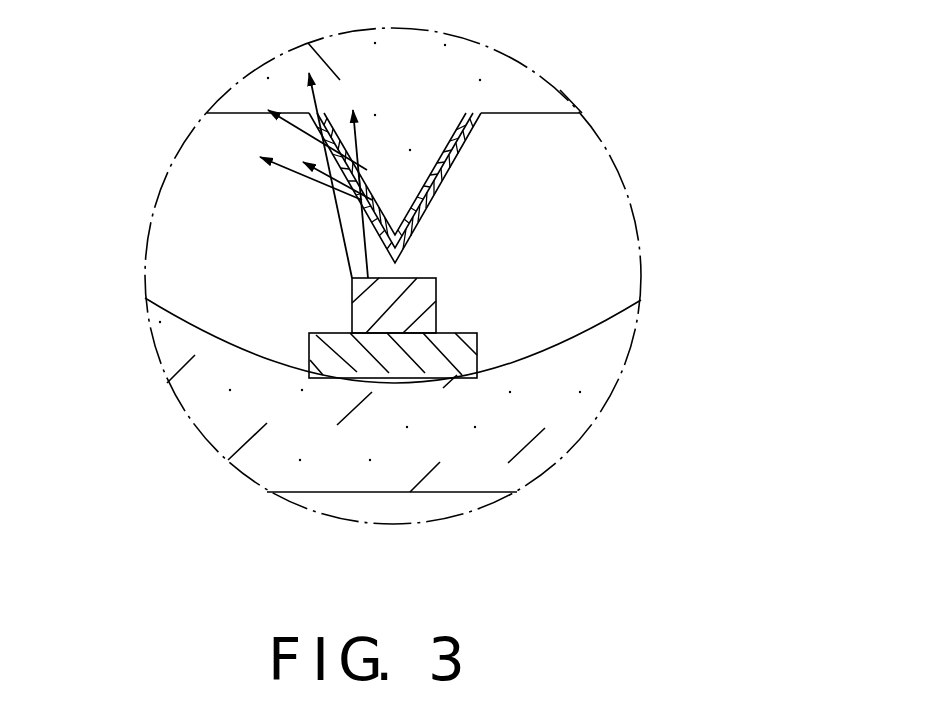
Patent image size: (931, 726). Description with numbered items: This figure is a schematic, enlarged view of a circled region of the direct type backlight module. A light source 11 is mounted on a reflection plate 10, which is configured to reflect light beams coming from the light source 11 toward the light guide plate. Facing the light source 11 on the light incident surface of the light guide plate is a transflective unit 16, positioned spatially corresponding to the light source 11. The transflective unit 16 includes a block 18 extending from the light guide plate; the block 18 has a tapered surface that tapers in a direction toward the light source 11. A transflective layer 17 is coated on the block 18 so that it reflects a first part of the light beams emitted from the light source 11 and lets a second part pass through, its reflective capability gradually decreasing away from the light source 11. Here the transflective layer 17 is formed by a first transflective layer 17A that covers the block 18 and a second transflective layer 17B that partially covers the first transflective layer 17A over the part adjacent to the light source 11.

The reflection plate 10 is at (545, 402).
The light source 11 is at (385, 302).
The transflective unit 16 is at (604, 190).
The transflective layer 17 is at (573, 216).
The first transflective layer 17A is at (455, 157).
The second transflective layer 17B is at (432, 215).
The block 18 is at (398, 148).